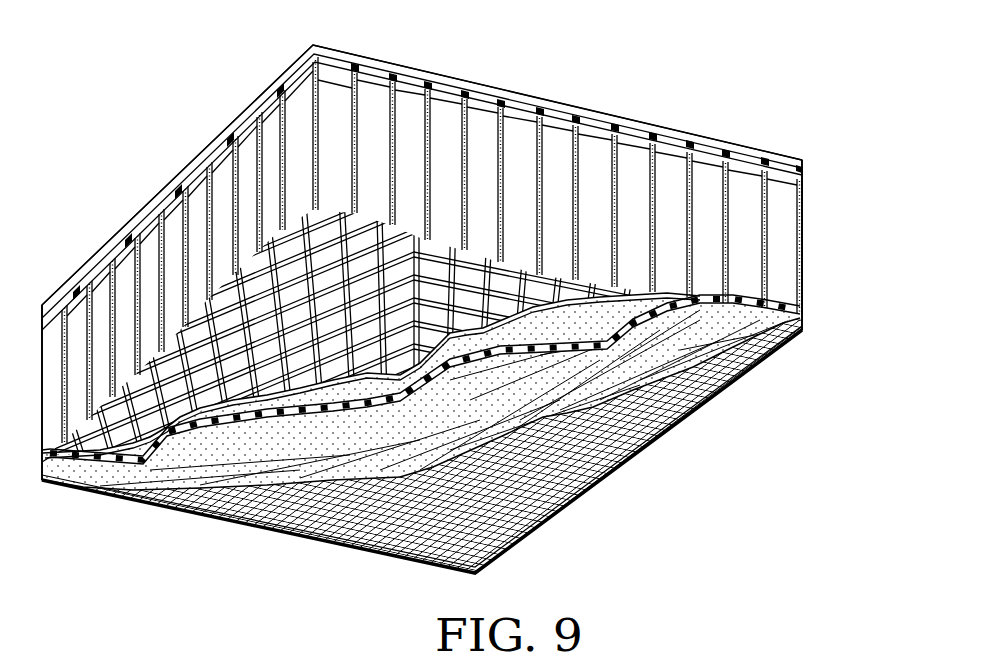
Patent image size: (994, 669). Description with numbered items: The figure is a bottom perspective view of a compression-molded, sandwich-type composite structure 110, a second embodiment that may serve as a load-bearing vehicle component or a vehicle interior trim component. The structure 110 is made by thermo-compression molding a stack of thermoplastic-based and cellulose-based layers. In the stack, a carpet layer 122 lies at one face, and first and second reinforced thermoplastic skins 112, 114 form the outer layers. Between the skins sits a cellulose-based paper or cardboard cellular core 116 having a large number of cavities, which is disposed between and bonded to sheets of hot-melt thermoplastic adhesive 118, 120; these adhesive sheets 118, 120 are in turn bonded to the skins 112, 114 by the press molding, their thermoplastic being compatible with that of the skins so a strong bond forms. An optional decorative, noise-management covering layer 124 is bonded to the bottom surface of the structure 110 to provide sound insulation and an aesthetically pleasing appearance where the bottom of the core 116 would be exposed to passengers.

The compression-molded, sandwich-type composite structure 110 is at (614, 53).
The first reinforced thermoplastic skin 112 is at (790, 177).
The second reinforced thermoplastic skin 114 is at (803, 328).
The cellular core 116 is at (803, 247).
The sheet of hot-melt adhesive 118 is at (775, 183).
The sheet of hot-melt adhesive 120 is at (787, 302).
The carpet layer 122 is at (801, 166).
The covering layer 124 is at (763, 353).